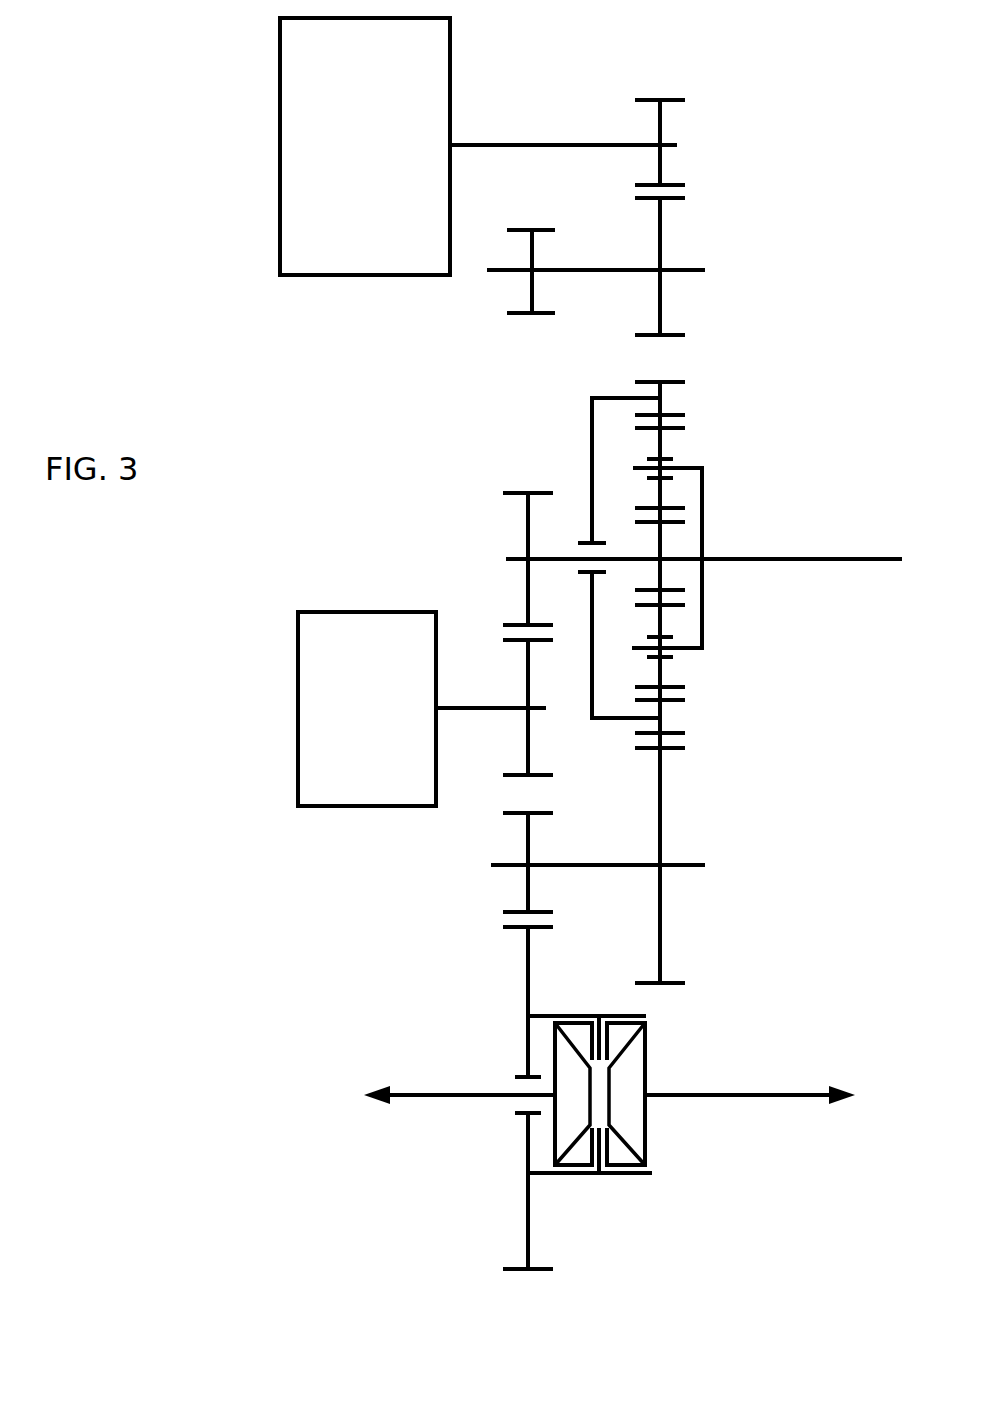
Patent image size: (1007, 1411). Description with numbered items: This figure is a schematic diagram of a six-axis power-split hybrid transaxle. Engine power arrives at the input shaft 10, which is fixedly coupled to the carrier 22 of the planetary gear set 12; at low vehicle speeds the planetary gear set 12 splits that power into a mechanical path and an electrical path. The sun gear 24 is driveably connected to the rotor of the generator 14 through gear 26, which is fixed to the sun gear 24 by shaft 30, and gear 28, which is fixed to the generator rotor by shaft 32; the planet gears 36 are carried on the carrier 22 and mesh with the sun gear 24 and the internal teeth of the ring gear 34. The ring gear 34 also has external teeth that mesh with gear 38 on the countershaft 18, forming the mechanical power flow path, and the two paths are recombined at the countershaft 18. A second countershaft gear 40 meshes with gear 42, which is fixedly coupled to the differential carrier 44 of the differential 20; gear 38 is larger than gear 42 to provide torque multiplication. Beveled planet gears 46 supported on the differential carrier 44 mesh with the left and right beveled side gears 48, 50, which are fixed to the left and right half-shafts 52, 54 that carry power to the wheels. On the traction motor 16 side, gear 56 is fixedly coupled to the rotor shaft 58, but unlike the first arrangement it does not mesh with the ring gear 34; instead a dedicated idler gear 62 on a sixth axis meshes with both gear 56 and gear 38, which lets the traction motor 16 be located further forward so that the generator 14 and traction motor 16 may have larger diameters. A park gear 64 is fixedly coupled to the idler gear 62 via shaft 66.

The input shaft 10 is at (833, 562).
The planetary gear set 12 is at (671, 682).
The generator 14 is at (365, 808).
The traction motor 16 is at (450, 55).
The countershaft 18 is at (684, 862).
The differential 20 is at (653, 1155).
The carrier 22 is at (703, 515).
The sun gear 24 is at (662, 570).
The gear 26 is at (528, 517).
The gear 28 is at (530, 756).
The shaft 30 is at (516, 562).
The shaft 32 is at (500, 710).
The ring gear 34 is at (592, 460).
The planet gears 36 is at (660, 442).
The gear 38 is at (663, 898).
The gear 40 is at (522, 884).
The gear 42 is at (522, 986).
The differential carrier 44 is at (540, 1176).
The beveled planet gears 46 is at (565, 1172).
The left beveled side gear 48 is at (553, 1119).
The right beveled side gear 50 is at (650, 1060).
The left half-shaft 52 is at (418, 1094).
The right half-shaft 54 is at (740, 1098).
The gear 56 is at (661, 170).
The rotor shaft 58 is at (538, 143).
The idler gear 62 is at (662, 295).
The park gear 64 is at (532, 300).
The shaft 66 is at (607, 268).